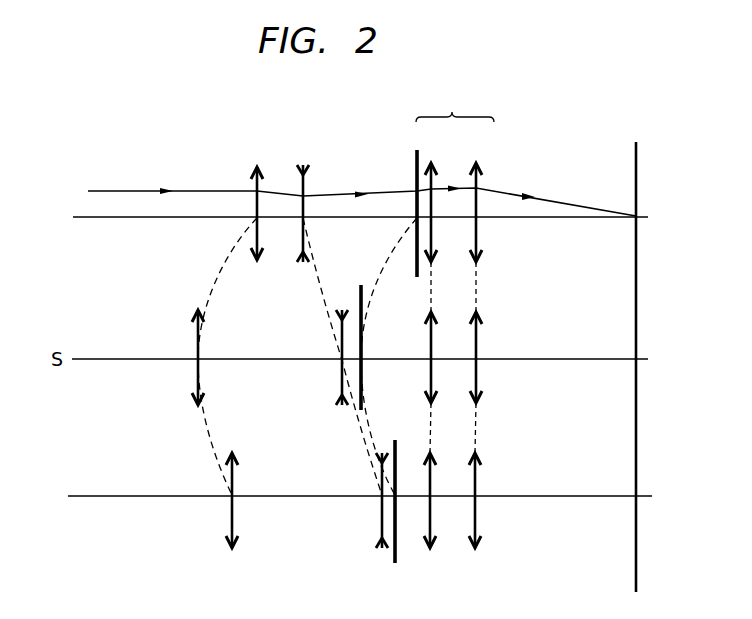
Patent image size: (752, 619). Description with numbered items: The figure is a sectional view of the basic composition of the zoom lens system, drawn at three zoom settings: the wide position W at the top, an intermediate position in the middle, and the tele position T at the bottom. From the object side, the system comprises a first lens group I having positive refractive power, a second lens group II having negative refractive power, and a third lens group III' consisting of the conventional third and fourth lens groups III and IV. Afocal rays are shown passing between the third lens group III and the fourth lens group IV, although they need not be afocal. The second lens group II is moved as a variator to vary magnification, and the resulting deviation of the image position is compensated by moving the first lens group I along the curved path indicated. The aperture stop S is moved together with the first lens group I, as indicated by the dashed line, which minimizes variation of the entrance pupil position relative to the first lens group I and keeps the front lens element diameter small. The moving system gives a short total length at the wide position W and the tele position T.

The first lens group I is at (253, 134).
The second lens group II is at (297, 134).
The third lens group III is at (432, 340).
The fourth lens group IV is at (487, 133).
The third lens group III' is at (455, 104).
The aperture stop S is at (413, 140).
The wide position W is at (349, 218).
The tele position T is at (351, 497).